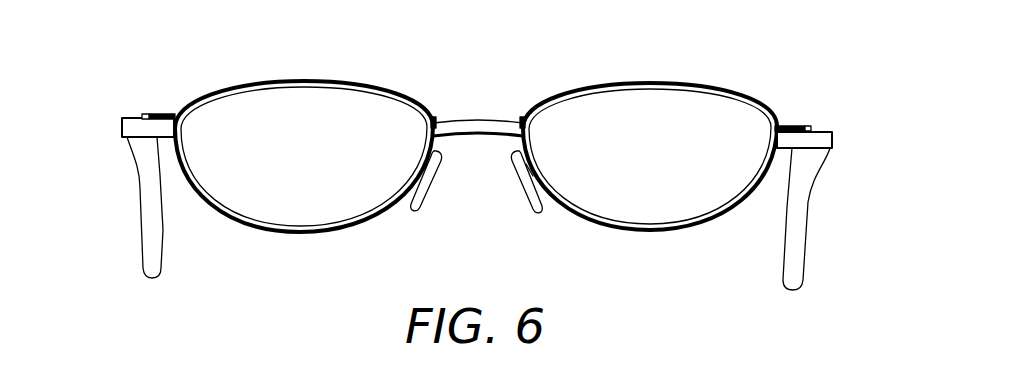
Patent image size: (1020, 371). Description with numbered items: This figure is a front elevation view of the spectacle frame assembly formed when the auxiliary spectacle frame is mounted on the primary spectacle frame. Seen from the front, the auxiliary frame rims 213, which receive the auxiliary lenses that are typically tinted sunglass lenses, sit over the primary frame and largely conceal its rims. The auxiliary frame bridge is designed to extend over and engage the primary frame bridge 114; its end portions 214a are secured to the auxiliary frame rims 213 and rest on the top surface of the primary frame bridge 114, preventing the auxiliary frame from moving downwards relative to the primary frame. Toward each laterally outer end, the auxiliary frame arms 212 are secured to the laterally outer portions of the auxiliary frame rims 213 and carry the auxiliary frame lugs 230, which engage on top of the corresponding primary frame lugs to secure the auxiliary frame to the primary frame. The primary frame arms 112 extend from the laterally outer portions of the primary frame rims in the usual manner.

The auxiliary frame rims 213 is at (317, 80).
The primary frame bridge 114 is at (482, 128).
The end portions 214a is at (520, 118).
The primary frame arms 112 is at (155, 130).
The auxiliary frame arms 212 is at (162, 114).
The auxiliary frame lugs 230 is at (143, 114).